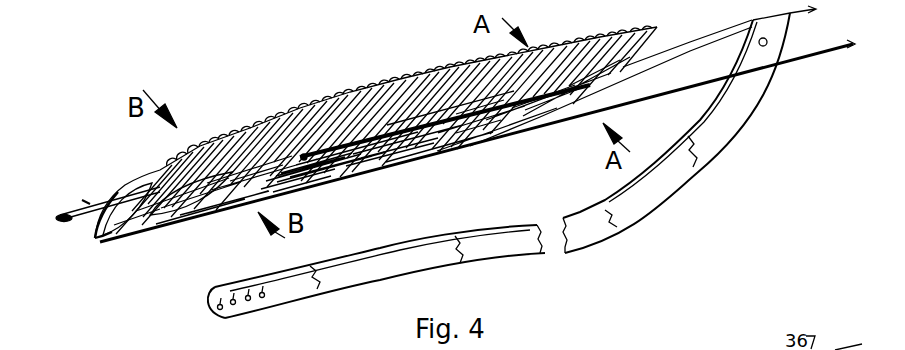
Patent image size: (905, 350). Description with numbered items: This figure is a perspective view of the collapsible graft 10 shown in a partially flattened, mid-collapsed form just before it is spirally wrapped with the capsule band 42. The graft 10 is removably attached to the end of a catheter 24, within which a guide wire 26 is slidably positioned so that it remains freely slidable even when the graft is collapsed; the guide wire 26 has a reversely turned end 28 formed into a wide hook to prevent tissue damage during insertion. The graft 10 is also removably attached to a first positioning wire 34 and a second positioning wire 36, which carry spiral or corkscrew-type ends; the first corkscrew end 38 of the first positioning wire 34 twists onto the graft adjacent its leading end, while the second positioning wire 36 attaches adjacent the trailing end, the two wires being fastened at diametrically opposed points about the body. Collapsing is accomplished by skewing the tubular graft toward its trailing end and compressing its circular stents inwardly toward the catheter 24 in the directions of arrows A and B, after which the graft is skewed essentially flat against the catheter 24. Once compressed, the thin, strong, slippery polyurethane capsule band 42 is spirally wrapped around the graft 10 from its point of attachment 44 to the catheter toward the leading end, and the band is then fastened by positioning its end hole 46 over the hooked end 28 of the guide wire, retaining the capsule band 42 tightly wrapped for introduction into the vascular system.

The collapsible graft 10 is at (340, 72).
The catheter 24 is at (117, 192).
The guide wire 26 is at (85, 202).
The reversely turned end 28 is at (62, 210).
The first positioning wire 34 is at (800, 58).
The second positioning wire 36 is at (662, 24).
The first corkscrew end 38 is at (132, 238).
The capsule band 42 is at (733, 98).
The point of attachment 44 is at (784, 40).
The end hole 46 is at (208, 316).